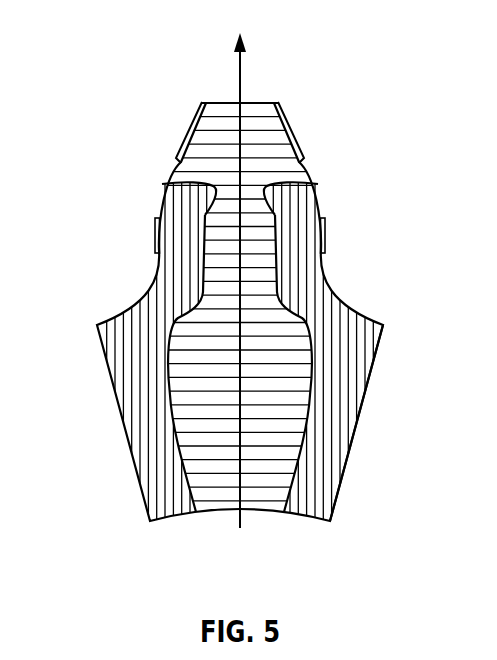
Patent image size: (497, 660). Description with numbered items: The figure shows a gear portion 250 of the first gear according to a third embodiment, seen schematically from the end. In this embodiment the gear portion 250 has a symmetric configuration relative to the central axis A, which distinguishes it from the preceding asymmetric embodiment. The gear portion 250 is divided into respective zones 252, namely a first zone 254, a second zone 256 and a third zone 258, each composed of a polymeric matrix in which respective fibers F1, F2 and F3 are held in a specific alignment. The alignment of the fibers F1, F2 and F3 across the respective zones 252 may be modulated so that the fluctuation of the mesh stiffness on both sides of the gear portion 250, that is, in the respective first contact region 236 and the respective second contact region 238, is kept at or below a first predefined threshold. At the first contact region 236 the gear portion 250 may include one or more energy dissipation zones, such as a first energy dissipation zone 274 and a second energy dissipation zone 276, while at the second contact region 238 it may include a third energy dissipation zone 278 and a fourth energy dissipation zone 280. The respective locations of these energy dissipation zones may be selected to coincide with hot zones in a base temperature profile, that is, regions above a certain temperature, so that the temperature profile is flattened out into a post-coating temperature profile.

The implant / prosthesis body 250 is at (153, 50).
The longitudinal axis A is at (244, 53).
The upper tapered portion 274 is at (312, 131).
The rim edge 278 is at (176, 135).
The left shoulder portion 238 is at (158, 188).
The right shoulder portion 236 is at (320, 187).
The central channel region 256 is at (268, 495).
The left wing portion 258 is at (115, 345).
The right wing portion 254 is at (362, 342).
The left side tab 280 is at (150, 232).
The right side tab 276 is at (330, 236).
The body outer wall 252 is at (363, 428).
The force F1 is at (342, 373).
The force F2 is at (233, 476).
The force F3 is at (155, 395).